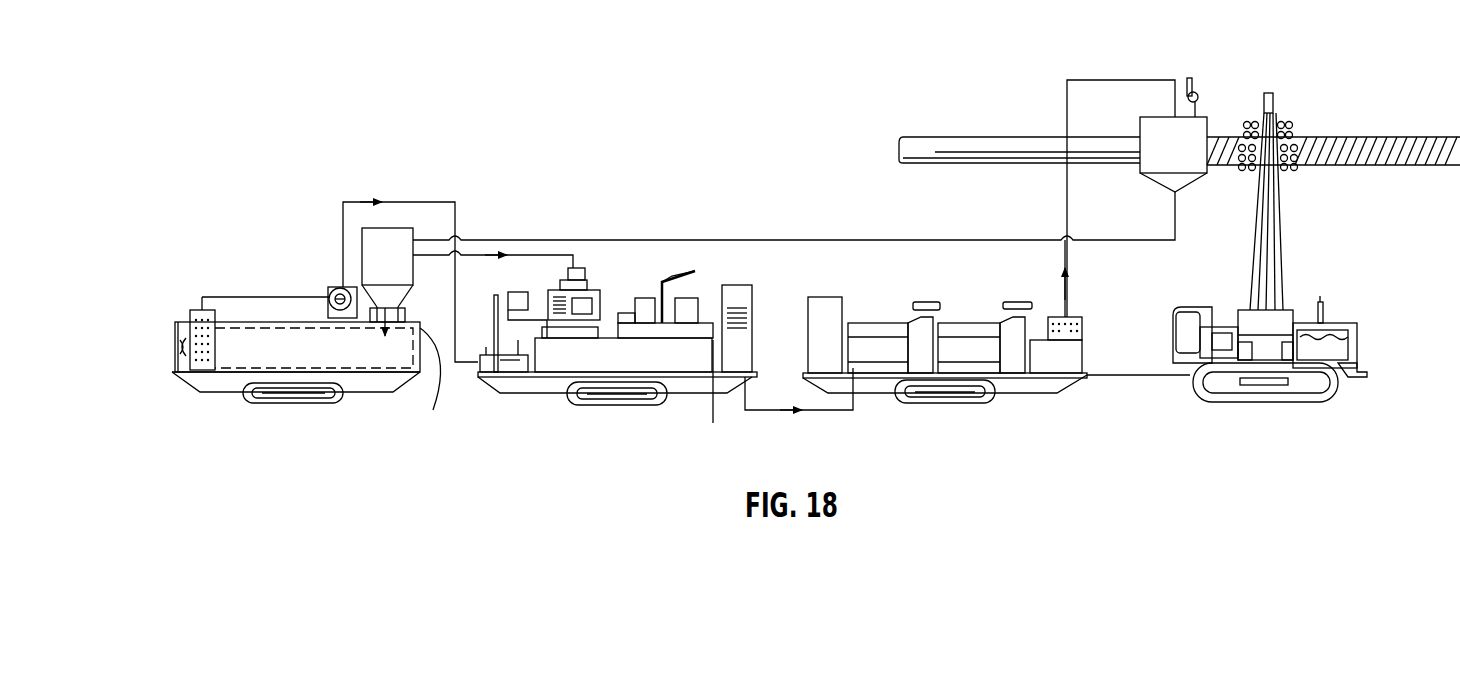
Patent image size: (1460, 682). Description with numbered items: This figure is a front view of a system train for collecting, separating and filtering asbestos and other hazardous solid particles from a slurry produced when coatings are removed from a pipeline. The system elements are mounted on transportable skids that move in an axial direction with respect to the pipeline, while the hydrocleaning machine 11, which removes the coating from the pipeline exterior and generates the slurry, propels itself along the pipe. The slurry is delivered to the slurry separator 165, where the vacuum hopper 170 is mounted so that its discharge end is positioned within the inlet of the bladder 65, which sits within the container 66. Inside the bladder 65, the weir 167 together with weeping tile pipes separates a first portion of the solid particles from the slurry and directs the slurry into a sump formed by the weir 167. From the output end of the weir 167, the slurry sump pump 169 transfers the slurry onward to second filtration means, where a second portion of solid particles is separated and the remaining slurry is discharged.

The hydrocleaning machine 11 is at (1223, 92).
The bladder 65 is at (174, 352).
The container 66 is at (435, 380).
The slurry separator 165 is at (243, 287).
The weir 167 is at (198, 332).
The slurry sump pump 169 is at (332, 287).
The vacuum hopper 170 is at (390, 248).